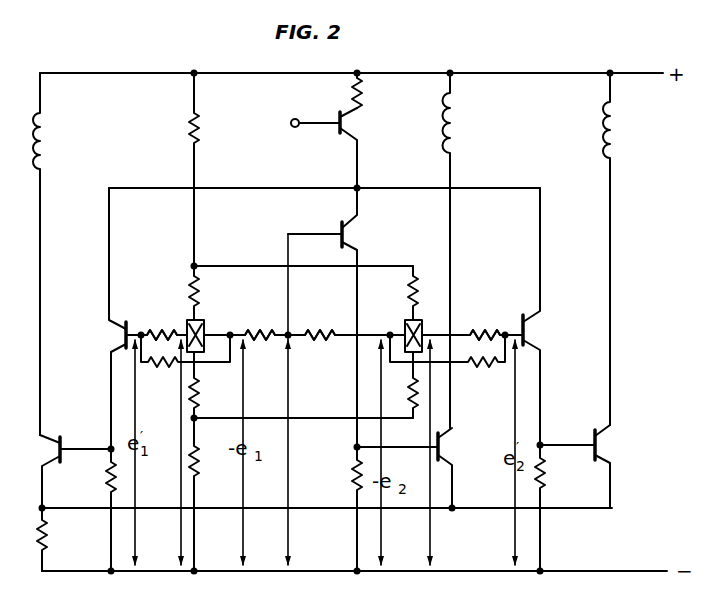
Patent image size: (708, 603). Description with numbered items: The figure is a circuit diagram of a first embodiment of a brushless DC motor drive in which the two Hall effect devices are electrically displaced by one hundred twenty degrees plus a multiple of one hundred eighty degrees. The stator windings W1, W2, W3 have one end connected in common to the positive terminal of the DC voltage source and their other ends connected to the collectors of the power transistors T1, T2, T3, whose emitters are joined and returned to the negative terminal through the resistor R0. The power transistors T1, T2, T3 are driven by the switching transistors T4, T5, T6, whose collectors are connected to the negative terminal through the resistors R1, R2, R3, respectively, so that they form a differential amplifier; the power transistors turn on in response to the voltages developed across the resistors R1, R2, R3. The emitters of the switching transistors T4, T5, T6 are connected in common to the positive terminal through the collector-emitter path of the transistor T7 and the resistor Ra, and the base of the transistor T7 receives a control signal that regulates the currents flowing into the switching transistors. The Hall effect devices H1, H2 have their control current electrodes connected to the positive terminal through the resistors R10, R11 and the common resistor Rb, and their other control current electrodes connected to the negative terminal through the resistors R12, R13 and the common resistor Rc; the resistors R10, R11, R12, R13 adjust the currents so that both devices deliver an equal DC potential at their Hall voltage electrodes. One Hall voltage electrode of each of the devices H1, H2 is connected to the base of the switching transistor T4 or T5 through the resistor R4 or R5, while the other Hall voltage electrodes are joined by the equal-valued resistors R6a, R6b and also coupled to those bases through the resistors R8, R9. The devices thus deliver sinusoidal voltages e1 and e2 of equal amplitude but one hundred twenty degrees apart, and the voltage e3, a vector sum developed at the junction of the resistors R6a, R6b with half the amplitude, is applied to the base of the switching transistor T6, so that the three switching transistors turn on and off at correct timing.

The stator winding W1 is at (46, 148).
The stator winding W2 is at (616, 106).
The stator winding W3 is at (456, 112).
The resistor Rb is at (199, 128).
The resistor Ra is at (350, 90).
The transistor T7 is at (352, 127).
The switching transistor T6 is at (354, 236).
The resistor R10 is at (190, 280).
The resistor R11 is at (420, 281).
The Hall effect device H1 is at (206, 320).
The Hall effect device H2 is at (403, 318).
The switching transistor T4 is at (113, 318).
The resistor R4 is at (168, 320).
The resistor R6a is at (266, 316).
The resistor R6b is at (326, 316).
The resistor R5 is at (483, 328).
The switching transistor T5 is at (535, 333).
The resistor R8 is at (161, 368).
The resistor R9 is at (481, 368).
The resistor R12 is at (198, 382).
The resistor R13 is at (407, 392).
The resistor Rc is at (199, 455).
The power transistor T1 is at (46, 432).
The resistor R1 is at (105, 468).
The resistor R0 is at (48, 528).
The power transistor T3 is at (450, 452).
The resistor R3 is at (352, 472).
The power transistor T2 is at (607, 448).
The resistor R2 is at (545, 466).
The sinusoidal voltage e1 is at (181, 452).
The sinusoidal voltage e3 is at (291, 400).
The sinusoidal voltage e2 is at (426, 452).